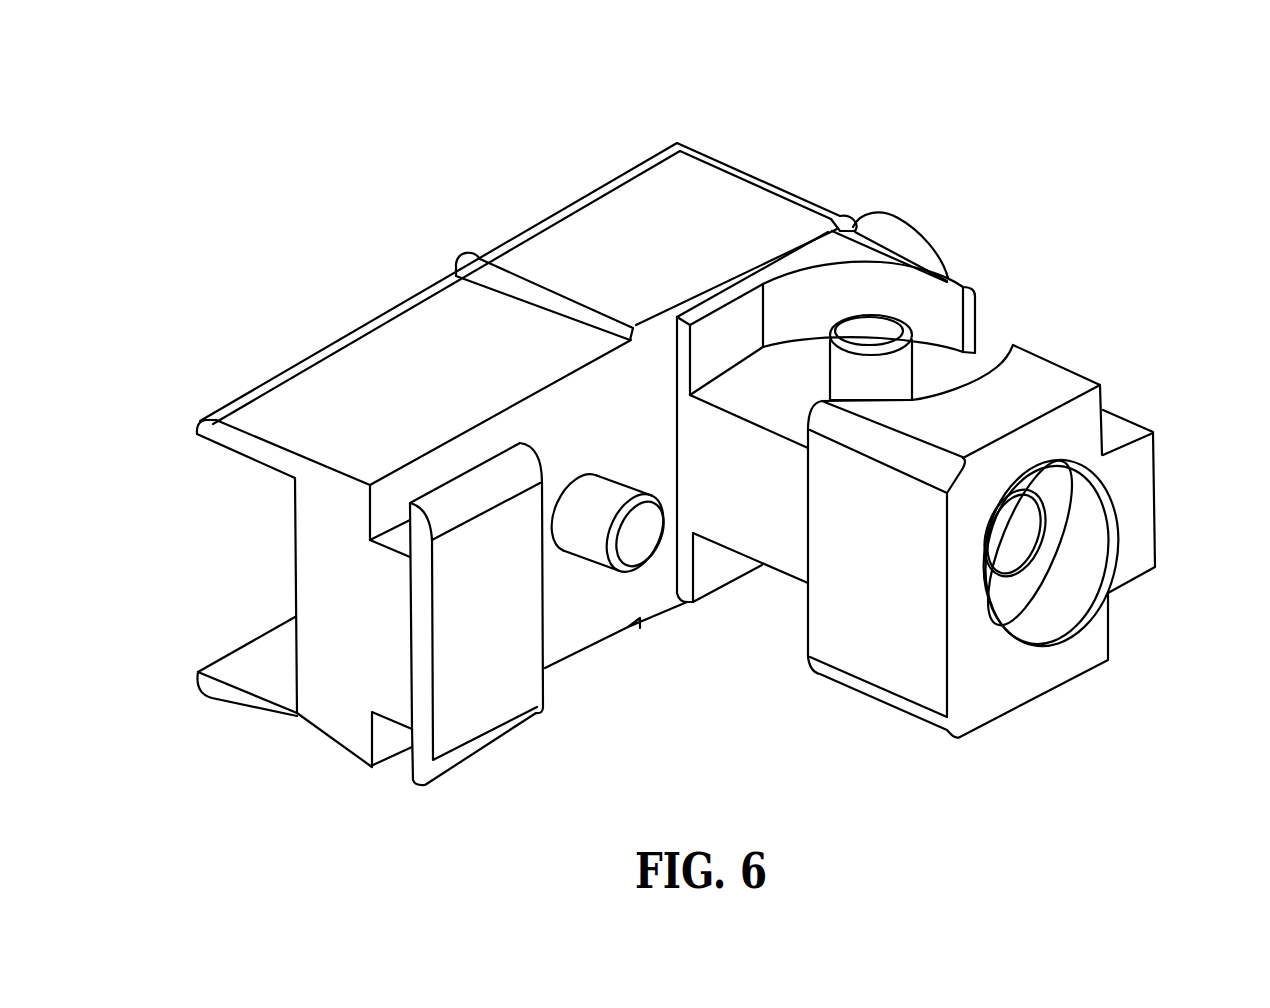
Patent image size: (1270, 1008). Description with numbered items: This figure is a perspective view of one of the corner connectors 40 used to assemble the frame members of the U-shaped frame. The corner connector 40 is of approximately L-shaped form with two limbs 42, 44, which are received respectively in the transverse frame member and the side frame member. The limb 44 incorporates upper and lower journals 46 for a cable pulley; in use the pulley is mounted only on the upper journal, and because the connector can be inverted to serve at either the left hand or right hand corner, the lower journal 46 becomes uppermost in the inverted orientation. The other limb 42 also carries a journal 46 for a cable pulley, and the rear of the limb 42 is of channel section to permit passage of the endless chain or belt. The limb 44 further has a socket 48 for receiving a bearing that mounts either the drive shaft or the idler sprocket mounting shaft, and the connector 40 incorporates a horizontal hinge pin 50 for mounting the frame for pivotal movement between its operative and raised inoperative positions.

The corner connector 40 is at (728, 412).
The limb 42 is at (357, 333).
The limb 44 is at (1034, 503).
The journal 46 is at (913, 340).
The socket 48 is at (1070, 597).
The hinge pin 50 is at (918, 230).